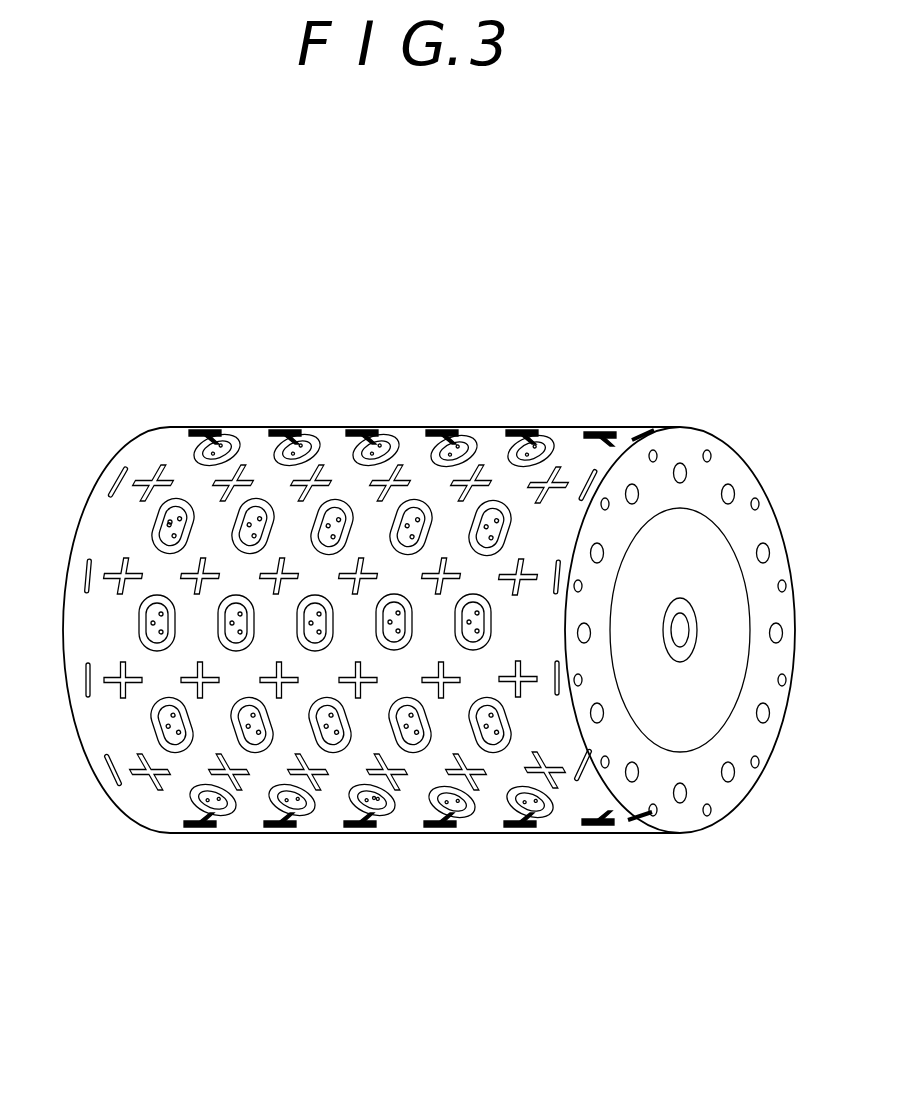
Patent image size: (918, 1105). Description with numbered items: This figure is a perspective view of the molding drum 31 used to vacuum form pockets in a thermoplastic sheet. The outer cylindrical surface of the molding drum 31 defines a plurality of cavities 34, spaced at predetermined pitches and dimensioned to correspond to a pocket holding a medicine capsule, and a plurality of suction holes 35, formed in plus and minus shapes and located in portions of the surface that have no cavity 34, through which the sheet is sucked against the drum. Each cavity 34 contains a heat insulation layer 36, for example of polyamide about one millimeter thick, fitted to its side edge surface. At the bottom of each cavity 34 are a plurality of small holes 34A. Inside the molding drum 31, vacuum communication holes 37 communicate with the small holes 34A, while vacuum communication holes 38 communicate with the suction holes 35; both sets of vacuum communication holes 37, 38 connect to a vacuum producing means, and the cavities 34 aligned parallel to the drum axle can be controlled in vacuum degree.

The molding drum 31 is at (332, 425).
The cavity 34 is at (223, 433).
The small hole 34A is at (157, 532).
The suction hole 35 is at (560, 470).
The heat insulation layer 36 is at (553, 443).
The vacuum communication hole 37 is at (683, 463).
The vacuum communication hole 38 is at (712, 458).